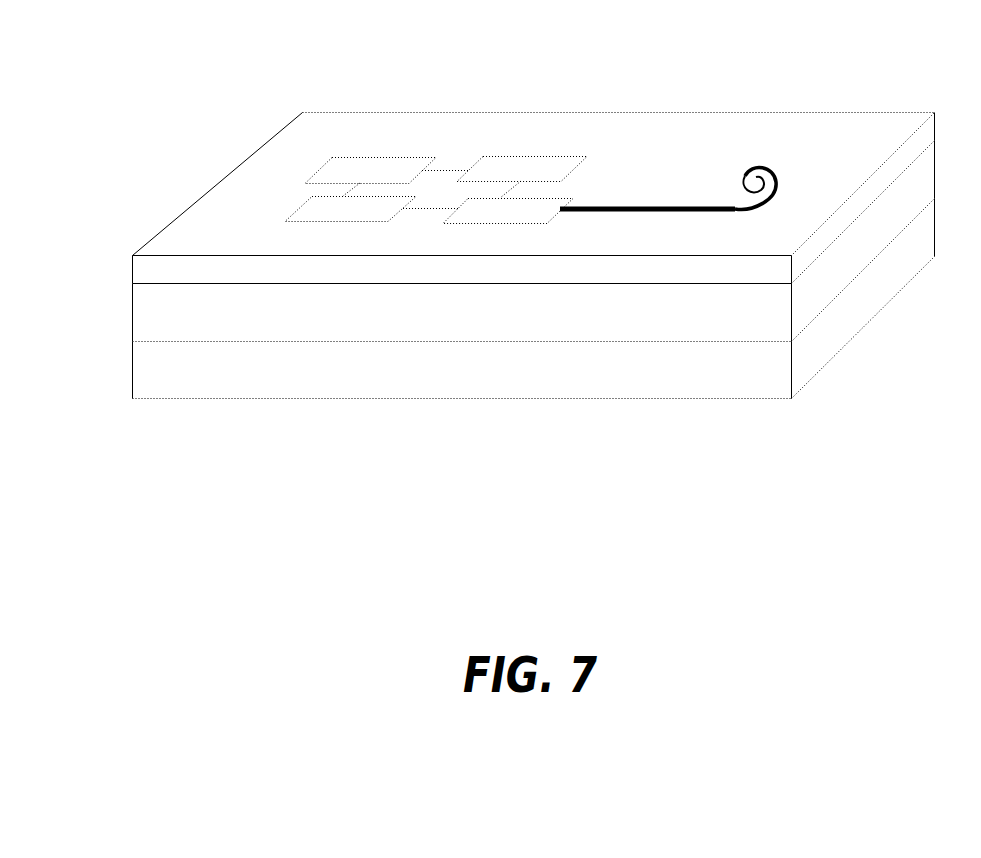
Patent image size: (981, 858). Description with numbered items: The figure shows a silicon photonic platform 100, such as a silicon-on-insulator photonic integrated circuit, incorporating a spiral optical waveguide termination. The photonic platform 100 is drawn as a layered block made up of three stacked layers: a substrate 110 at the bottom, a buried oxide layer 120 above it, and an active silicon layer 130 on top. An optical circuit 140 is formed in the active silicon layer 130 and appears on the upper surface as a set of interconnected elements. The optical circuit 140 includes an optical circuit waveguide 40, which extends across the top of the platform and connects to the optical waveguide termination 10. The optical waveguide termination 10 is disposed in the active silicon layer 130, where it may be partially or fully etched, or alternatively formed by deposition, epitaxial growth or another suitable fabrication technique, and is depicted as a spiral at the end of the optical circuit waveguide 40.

The photonic platform 100 is at (476, 223).
The active silicon layer 130 is at (148, 267).
The buried oxide layer 120 is at (160, 312).
The substrate 110 is at (162, 380).
The optical circuit 140 is at (520, 155).
The optical circuit waveguide 40 is at (646, 207).
The optical waveguide termination 10 is at (741, 152).